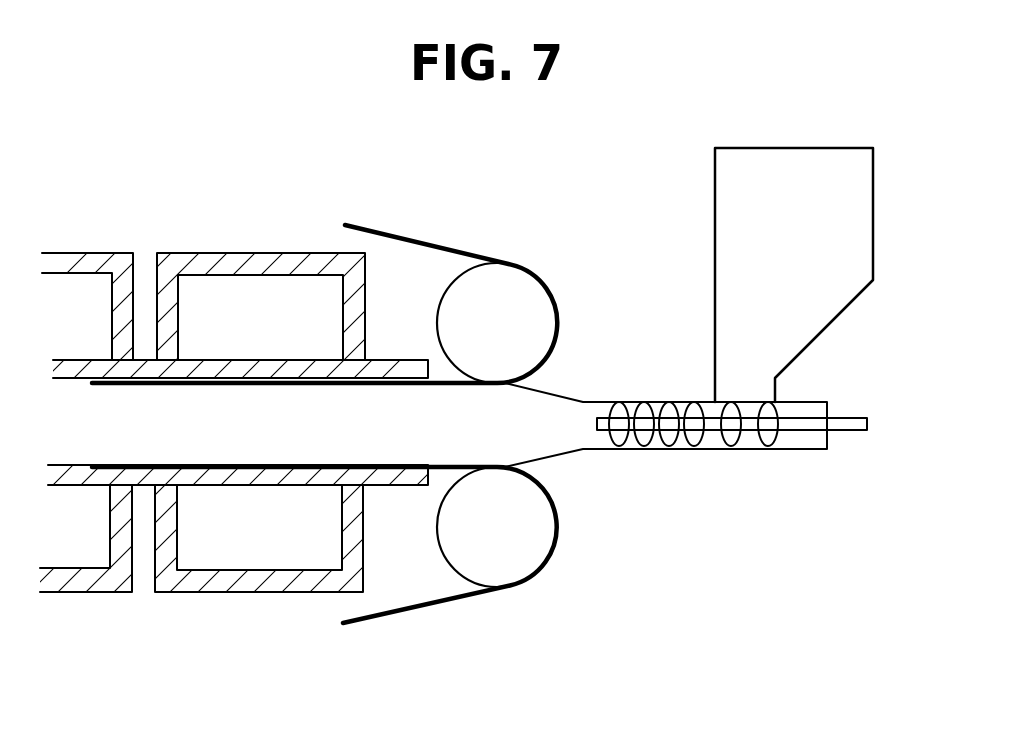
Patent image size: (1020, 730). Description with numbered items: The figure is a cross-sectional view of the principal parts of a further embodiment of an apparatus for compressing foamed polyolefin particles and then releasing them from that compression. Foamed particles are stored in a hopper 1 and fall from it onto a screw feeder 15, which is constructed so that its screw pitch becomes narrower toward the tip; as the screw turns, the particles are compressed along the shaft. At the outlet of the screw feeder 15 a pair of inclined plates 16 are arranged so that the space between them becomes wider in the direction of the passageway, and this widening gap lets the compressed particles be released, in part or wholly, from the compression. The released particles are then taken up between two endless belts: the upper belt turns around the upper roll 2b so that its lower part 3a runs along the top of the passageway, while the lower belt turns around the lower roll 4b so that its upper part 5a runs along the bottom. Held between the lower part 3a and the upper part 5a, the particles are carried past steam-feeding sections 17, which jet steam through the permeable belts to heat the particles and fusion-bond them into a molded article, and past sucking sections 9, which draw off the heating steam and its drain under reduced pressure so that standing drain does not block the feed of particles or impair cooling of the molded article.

The hopper 1 is at (813, 315).
The upper roll 2b is at (517, 313).
The lower roll 4b is at (520, 557).
The lower part of the upper belt 3a is at (437, 385).
The upper part of the lower belt 5a is at (457, 462).
The sucking section 9 is at (253, 263).
The screw feeder 15 is at (725, 443).
The inclined plate 16 is at (547, 392).
The steam-feeding section 17 is at (112, 250).